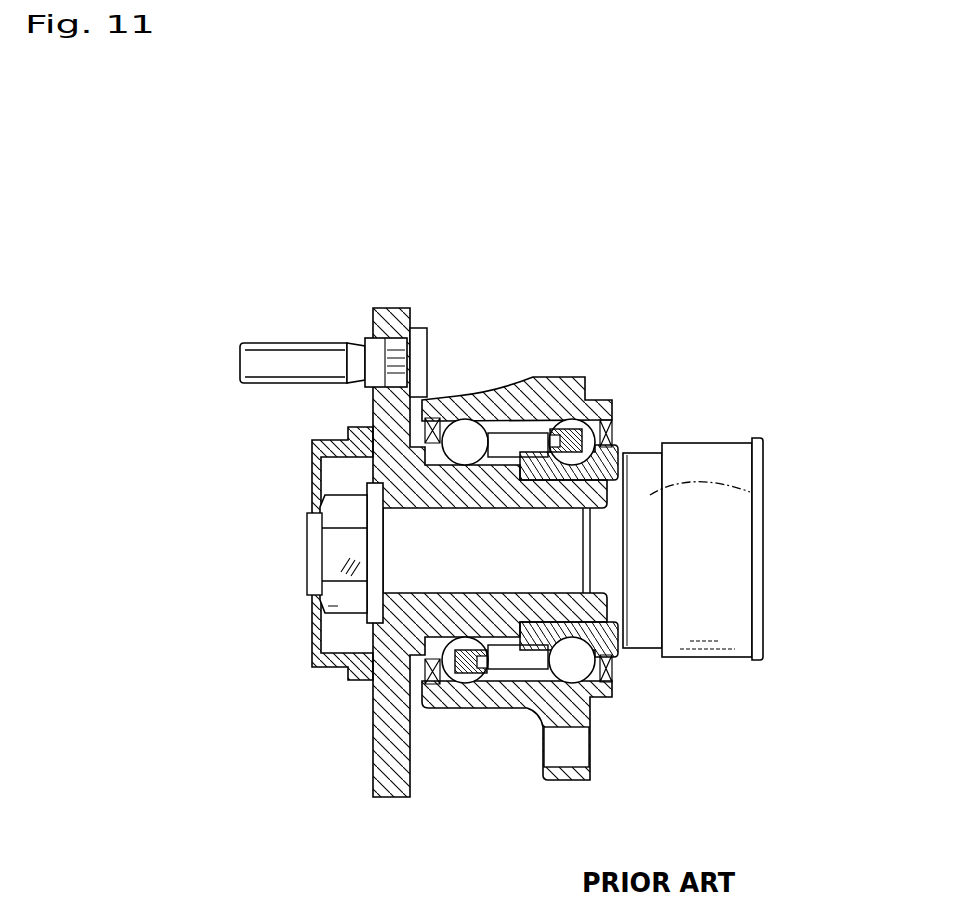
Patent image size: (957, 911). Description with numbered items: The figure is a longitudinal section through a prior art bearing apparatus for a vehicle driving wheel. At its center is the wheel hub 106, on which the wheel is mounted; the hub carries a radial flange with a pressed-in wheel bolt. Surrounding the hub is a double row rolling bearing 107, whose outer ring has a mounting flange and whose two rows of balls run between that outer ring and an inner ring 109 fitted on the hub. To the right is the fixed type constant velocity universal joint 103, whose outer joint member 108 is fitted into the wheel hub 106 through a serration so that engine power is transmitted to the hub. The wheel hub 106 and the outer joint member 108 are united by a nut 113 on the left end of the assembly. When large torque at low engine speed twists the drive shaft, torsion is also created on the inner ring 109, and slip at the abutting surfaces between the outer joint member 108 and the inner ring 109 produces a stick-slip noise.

The fixed type constant velocity universal joint 103 is at (743, 426).
The wheel hub 106 is at (347, 432).
The double row rolling bearing 107 is at (604, 385).
The outer joint member 108 is at (766, 492).
The inner ring 109 is at (623, 450).
The nut 113 is at (310, 606).